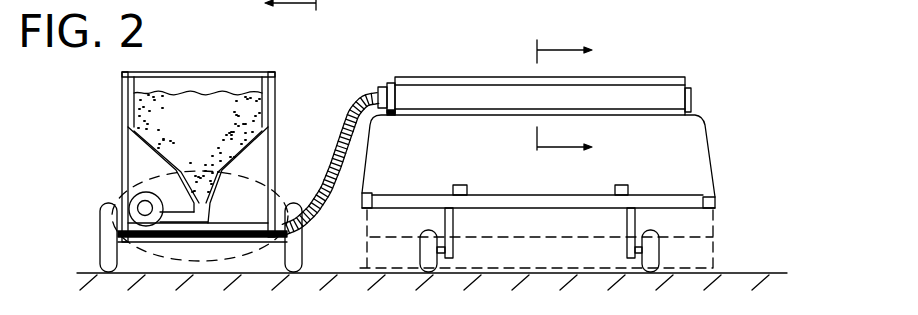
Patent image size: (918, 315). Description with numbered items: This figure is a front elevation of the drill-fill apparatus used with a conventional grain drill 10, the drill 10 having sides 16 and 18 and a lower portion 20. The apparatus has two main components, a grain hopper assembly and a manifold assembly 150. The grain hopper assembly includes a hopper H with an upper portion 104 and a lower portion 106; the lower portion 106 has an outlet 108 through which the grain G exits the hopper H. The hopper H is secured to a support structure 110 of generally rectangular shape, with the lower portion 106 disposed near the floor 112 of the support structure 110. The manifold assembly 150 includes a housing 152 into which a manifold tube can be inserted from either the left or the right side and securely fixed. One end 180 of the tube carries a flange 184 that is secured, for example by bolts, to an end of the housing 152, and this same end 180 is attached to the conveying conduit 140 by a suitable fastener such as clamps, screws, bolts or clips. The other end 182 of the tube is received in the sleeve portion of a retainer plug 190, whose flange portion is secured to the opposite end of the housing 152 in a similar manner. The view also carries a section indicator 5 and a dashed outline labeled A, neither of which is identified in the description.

The grain drill 10 is at (562, 136).
The side 16 is at (713, 175).
The side 18 is at (343, 161).
The lower portion 20 is at (675, 209).
The upper portion 104 is at (163, 83).
The lower portion 106 is at (190, 195).
The outlet 108 is at (152, 210).
The support structure 110 is at (122, 106).
The floor 112 is at (150, 246).
The conveying conduit 140 is at (514, 240).
The manifold assembly 150 is at (596, 57).
The housing 152 is at (672, 81).
The end of manifold tube 180 is at (381, 88).
The other end of manifold tube 182 is at (656, 101).
The flange 184 is at (391, 82).
The retainer plug 190 is at (690, 100).
The section line 5- 5 is at (564, 99).
The region A is at (210, 260).
The grain G is at (192, 123).
The hopper H is at (150, 152).